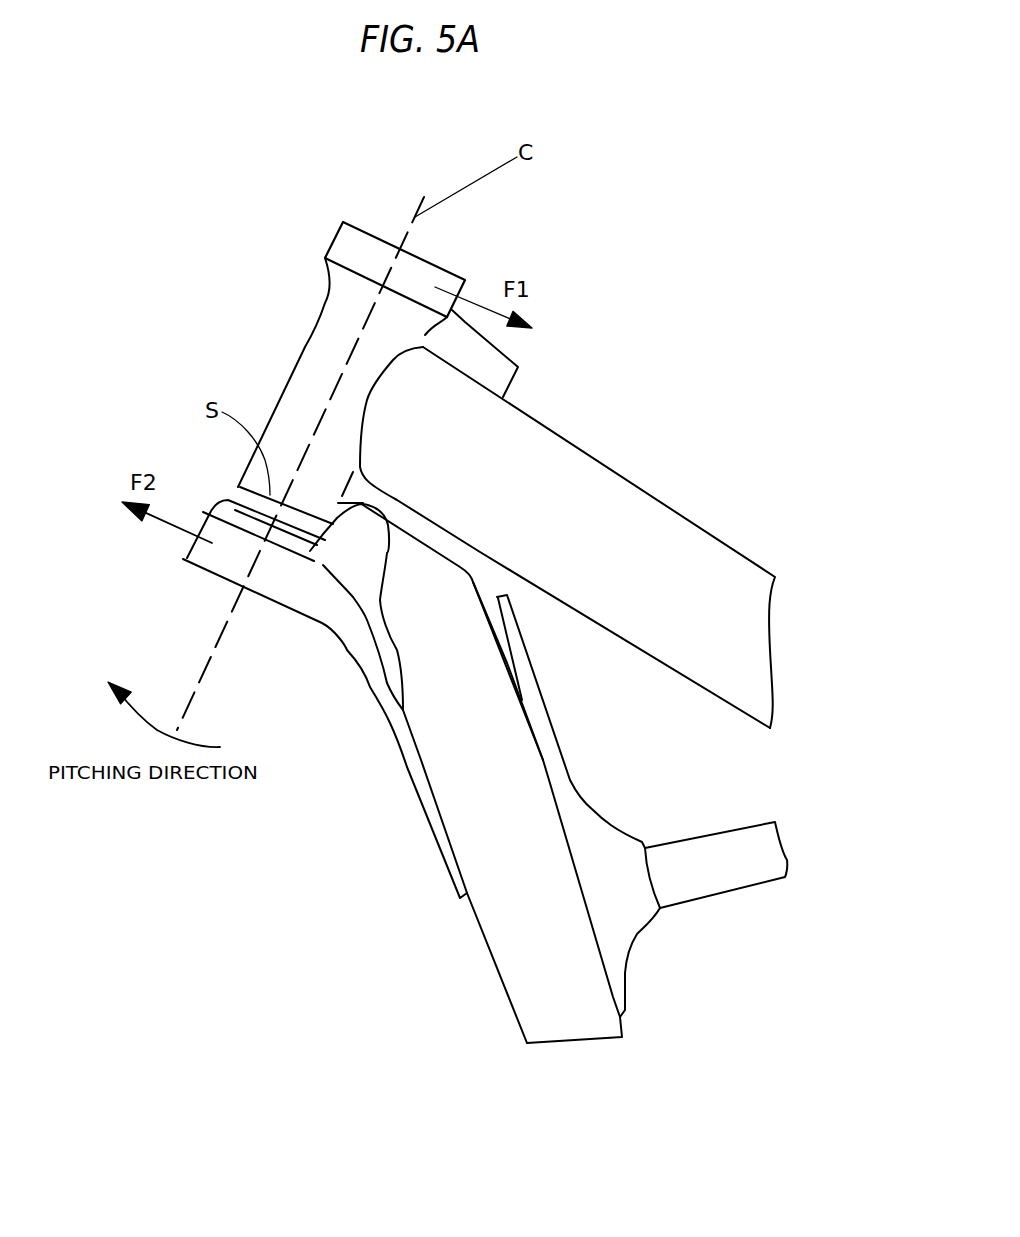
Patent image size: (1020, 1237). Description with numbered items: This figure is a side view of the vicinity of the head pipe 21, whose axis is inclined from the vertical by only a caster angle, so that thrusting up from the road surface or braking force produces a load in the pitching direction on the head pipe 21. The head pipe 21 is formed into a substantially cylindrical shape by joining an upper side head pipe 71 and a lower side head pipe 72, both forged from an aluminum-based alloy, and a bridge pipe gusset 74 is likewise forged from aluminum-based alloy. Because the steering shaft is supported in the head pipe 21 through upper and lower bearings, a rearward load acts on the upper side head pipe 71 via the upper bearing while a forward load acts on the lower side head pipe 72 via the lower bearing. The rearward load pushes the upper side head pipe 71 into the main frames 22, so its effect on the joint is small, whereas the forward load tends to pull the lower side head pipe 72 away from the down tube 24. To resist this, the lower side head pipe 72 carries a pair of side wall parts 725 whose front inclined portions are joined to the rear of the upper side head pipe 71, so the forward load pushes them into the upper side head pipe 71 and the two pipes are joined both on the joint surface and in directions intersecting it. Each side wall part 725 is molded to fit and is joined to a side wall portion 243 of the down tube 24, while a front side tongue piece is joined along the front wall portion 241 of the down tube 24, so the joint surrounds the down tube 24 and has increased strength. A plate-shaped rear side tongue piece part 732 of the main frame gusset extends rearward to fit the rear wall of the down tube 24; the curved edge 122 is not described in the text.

The head pipe 21 is at (336, 190).
The main frame 22 is at (693, 479).
The down tube 24 is at (473, 994).
The upper side head pipe 71 is at (310, 332).
The lower side head pipe 72 is at (202, 568).
The side wall part 725 is at (357, 580).
The rear side tongue piece part 732 is at (488, 563).
The bridge pipe gusset 74 is at (625, 810).
The curved edge portion 122 is at (397, 743).
The front wall portion 241 is at (473, 907).
The side wall portion 243 is at (443, 775).